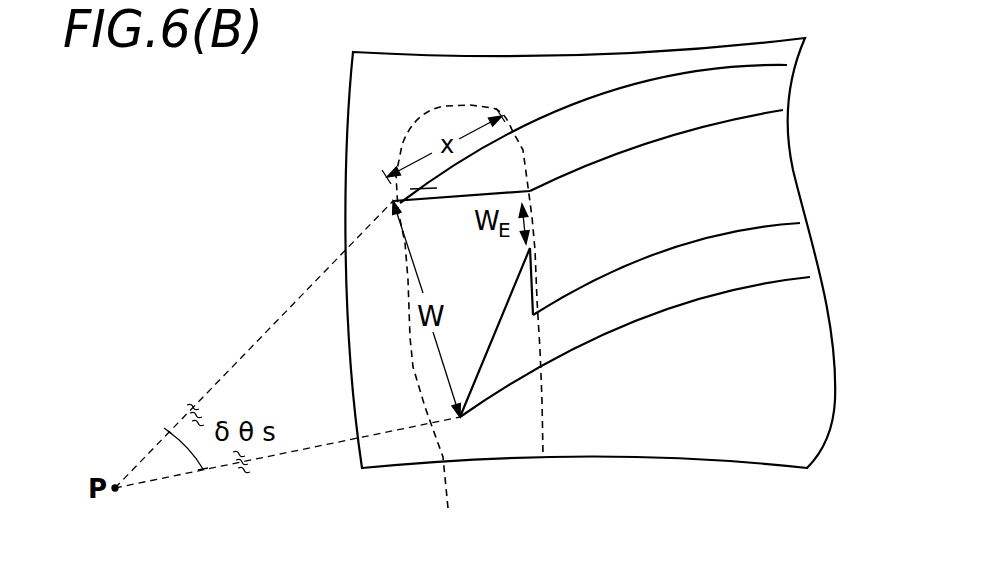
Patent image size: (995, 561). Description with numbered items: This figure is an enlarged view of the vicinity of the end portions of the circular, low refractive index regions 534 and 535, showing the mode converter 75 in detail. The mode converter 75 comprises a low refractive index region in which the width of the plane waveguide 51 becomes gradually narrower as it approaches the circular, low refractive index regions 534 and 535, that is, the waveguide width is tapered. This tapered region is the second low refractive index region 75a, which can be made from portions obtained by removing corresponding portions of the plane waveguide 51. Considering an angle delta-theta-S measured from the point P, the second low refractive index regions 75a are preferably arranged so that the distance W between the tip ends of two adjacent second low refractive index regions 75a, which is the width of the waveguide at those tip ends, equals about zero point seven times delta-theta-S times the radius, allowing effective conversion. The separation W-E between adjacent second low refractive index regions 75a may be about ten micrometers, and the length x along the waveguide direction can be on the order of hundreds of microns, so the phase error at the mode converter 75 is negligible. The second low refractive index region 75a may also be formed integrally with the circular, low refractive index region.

The plane waveguide 51 is at (823, 381).
The circular, low refractive index region 535 is at (786, 95).
The circular, low refractive index region 534 is at (806, 256).
The mode converter 75 is at (553, 401).
The second low refractive index region 75a is at (430, 188).